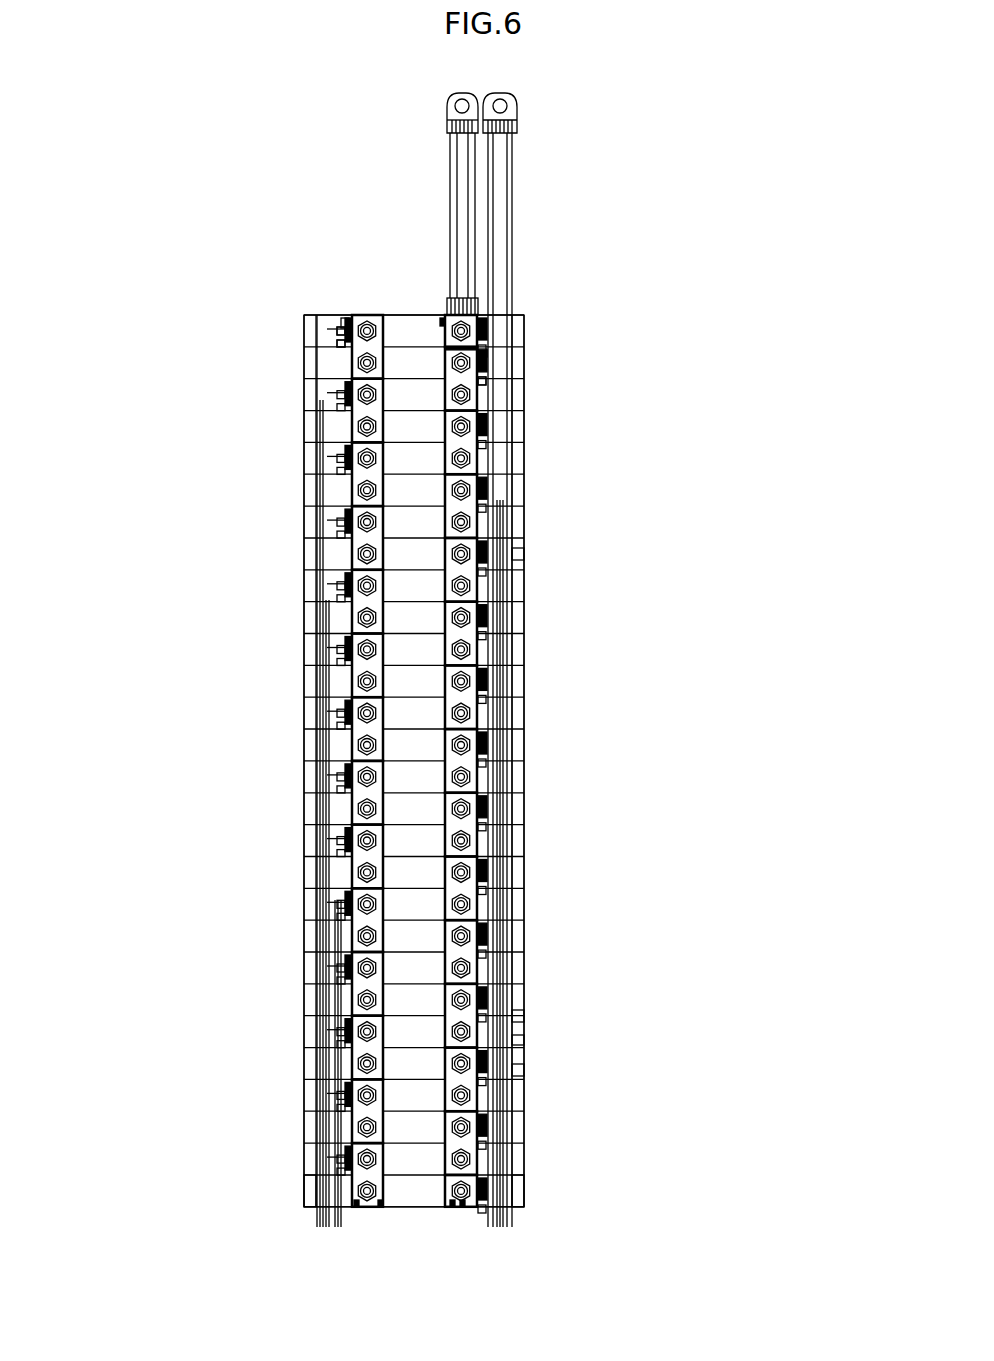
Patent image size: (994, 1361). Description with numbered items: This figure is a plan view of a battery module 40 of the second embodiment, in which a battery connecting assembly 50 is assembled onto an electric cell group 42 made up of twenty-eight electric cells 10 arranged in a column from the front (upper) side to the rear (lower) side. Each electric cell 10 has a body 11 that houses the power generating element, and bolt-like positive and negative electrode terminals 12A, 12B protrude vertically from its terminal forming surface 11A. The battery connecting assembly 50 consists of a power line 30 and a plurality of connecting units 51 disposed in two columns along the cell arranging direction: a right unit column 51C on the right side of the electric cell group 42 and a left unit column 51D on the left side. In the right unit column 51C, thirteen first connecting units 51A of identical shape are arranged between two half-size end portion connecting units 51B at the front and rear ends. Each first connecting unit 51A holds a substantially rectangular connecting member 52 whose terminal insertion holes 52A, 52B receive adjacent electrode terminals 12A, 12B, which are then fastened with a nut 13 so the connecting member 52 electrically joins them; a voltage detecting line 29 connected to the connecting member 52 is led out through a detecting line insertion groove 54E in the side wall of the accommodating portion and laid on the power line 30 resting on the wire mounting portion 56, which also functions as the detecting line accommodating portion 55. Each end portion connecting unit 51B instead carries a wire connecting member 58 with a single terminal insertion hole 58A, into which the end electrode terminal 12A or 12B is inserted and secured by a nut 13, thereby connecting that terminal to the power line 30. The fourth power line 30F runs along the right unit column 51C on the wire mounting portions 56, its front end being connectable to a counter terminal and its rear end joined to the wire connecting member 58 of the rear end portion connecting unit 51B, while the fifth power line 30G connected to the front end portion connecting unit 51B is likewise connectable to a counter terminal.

The electric cell 10 is at (304, 440).
The body 11 is at (304, 1207).
The terminal forming surface 11A is at (527, 1192).
The positive electrode terminal 12A is at (360, 322).
The negative electrode terminal 12B is at (472, 316).
The nut 13 is at (527, 333).
The voltage detecting line 29 is at (325, 1227).
The power line 30 is at (512, 152).
The fourth power line 30F is at (512, 218).
The fifth power line 30G is at (452, 187).
The battery module 40 is at (333, 172).
The electric cell group 42 is at (304, 322).
The battery connecting assembly 50 is at (527, 338).
The connecting unit 51 is at (500, 392).
The first connecting unit 51A is at (340, 725).
The end portion connecting unit 51B is at (441, 318).
The right unit column 51C is at (453, 1208).
The left unit column 51D is at (357, 1208).
The connecting member 52 is at (503, 578).
The terminal insertion hole 52A is at (489, 348).
The terminal insertion hole 52B is at (490, 397).
The detecting line insertion groove 54E is at (345, 317).
The detecting line accommodating portion 55 is at (312, 1178).
The wire mounting portion 56 is at (520, 558).
The wire connecting member 58 is at (470, 1208).
The terminal insertion hole 58A is at (443, 335).